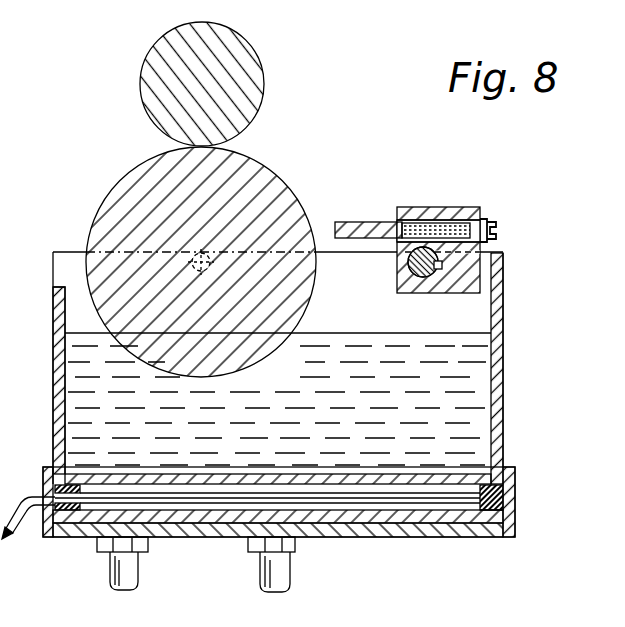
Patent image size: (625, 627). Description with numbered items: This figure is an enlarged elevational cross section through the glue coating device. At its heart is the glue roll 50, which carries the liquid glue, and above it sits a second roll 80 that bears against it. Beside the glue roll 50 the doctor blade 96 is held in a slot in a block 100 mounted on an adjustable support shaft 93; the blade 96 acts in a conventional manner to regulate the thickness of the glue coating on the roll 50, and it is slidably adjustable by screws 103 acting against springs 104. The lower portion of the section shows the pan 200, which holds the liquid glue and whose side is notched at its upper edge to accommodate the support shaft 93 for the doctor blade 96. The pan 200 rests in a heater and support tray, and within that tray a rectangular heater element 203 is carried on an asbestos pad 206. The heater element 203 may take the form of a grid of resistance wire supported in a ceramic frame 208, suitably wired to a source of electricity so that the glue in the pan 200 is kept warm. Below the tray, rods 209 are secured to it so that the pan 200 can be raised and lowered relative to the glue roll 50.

The glue roll 50 is at (120, 202).
The pressure roller 80 is at (257, 77).
The adjustable support shaft 93 is at (427, 293).
The doctor blade 96 is at (373, 226).
The block 100 is at (475, 210).
The screws 103 is at (497, 223).
The springs 104 is at (435, 222).
The pan 200 is at (505, 403).
The heater element 203 is at (437, 500).
The asbestos pad 206 is at (485, 516).
The ceramic frame 208 is at (505, 505).
The rods 209 is at (128, 573).